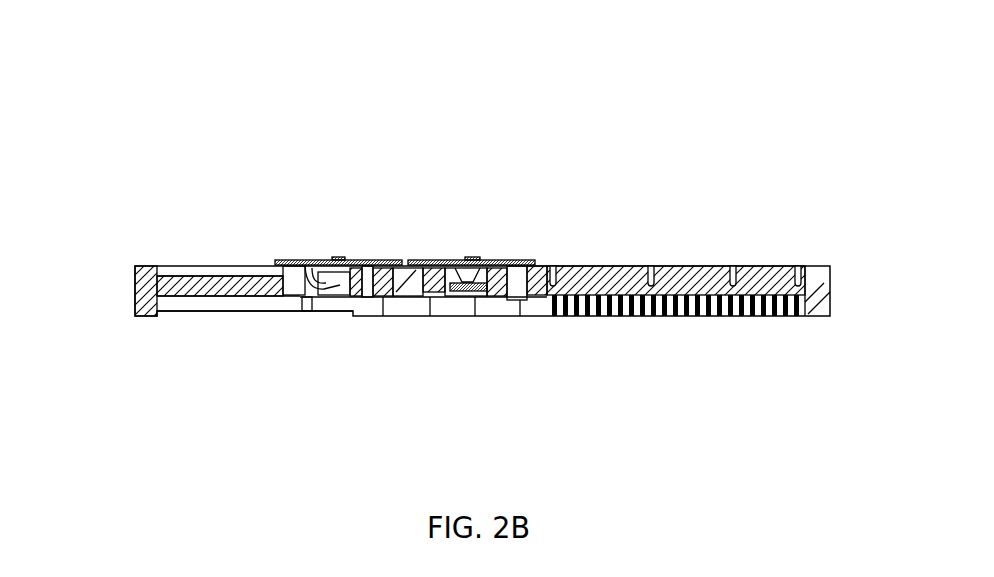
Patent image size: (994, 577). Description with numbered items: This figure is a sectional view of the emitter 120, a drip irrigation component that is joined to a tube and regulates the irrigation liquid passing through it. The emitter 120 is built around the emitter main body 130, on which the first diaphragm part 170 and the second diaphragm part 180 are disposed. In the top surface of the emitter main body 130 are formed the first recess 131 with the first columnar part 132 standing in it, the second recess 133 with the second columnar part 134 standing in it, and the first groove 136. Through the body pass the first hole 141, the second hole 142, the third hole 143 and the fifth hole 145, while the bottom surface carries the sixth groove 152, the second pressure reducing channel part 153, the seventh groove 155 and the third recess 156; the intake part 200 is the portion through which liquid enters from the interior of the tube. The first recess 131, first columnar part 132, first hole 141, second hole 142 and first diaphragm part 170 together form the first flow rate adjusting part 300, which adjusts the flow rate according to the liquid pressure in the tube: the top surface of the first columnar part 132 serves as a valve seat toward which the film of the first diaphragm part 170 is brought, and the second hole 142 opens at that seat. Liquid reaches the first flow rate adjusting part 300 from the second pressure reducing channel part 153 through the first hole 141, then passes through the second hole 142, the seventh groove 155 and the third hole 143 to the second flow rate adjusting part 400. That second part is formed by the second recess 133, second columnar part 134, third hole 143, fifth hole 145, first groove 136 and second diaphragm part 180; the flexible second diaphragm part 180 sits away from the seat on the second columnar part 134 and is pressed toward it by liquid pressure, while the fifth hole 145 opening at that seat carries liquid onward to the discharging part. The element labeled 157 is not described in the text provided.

The emitter 120 is at (802, 89).
The emitter main body 130 is at (140, 263).
The first recess 131 is at (423, 262).
The first columnar part 132 is at (488, 262).
The second recess 133 is at (372, 262).
The second columnar part 134 is at (293, 266).
The first groove 136 is at (307, 263).
The first hole 141 is at (523, 307).
The second hole 142 is at (478, 300).
The third hole 143 is at (387, 313).
The fifth hole 145 is at (345, 303).
The sixth groove 152 is at (802, 310).
The second pressure reducing channel part 153 is at (653, 317).
The seventh groove 155 is at (427, 305).
The third recess 156 is at (228, 315).
The retaining tab 157 is at (308, 313).
The first diaphragm part 170 is at (525, 262).
The second diaphragm part 180 is at (327, 260).
The intake part 200 is at (705, 218).
The first flow rate adjusting part 300 is at (495, 143).
The second flow rate adjusting part 400 is at (338, 143).